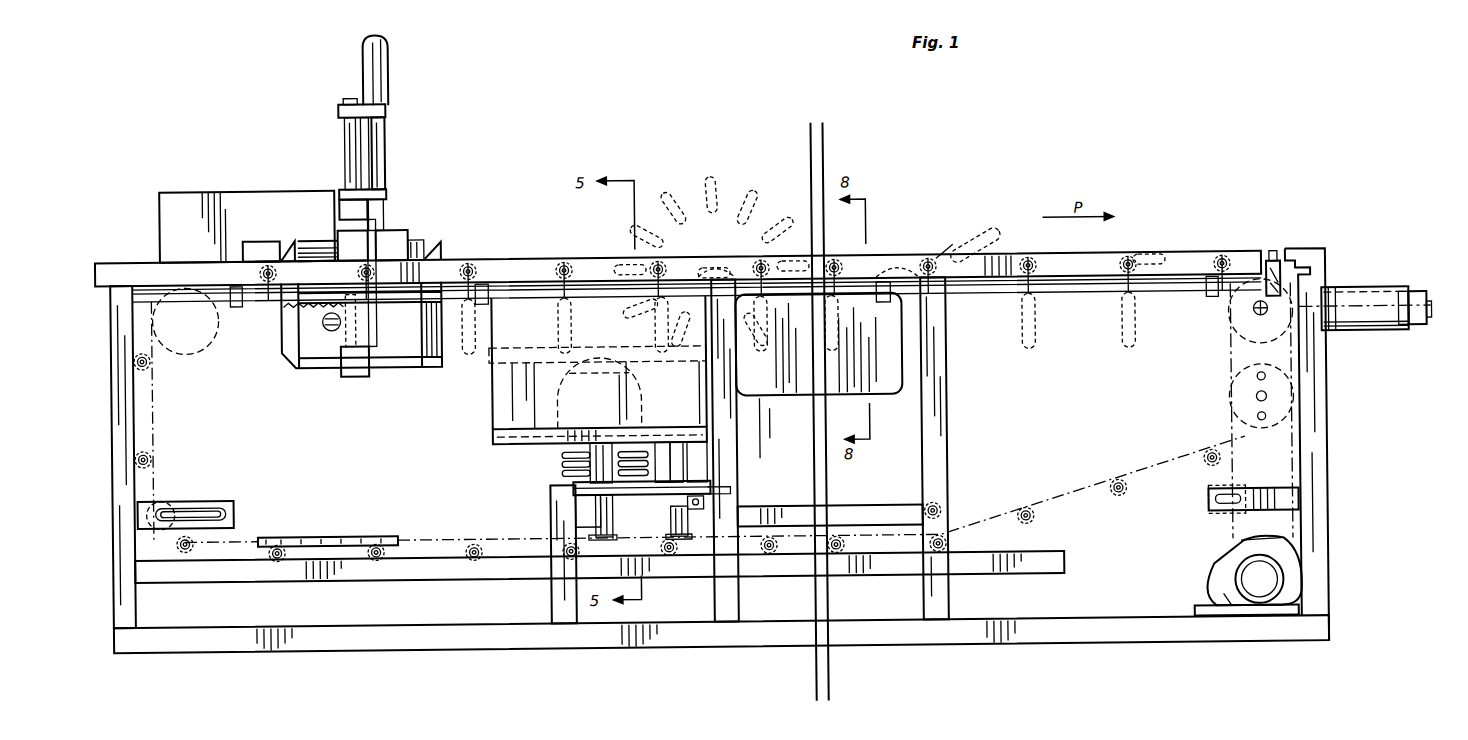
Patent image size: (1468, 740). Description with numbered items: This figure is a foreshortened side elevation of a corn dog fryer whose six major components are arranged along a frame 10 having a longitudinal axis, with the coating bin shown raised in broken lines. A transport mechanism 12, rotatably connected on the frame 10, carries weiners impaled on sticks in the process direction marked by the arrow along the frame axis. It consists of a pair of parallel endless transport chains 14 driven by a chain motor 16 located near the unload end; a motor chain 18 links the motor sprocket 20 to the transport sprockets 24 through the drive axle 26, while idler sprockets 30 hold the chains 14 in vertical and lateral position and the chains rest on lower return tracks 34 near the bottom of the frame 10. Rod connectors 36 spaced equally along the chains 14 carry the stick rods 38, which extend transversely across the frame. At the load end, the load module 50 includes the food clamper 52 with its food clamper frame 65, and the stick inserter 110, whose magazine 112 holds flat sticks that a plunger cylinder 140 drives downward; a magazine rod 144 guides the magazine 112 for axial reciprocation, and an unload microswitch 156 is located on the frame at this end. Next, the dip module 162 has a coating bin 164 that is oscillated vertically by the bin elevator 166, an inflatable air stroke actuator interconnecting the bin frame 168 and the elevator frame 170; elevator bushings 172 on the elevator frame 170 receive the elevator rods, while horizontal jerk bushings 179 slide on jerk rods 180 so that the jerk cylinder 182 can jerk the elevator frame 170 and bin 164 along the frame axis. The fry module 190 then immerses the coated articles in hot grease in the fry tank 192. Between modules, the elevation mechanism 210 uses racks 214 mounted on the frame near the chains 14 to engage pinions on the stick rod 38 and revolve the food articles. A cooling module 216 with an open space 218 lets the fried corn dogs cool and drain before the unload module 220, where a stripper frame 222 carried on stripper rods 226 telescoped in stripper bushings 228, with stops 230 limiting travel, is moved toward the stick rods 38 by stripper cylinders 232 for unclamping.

The frame 10 is at (1110, 612).
The transport mechanism 12 is at (313, 526).
The transport chains 14 is at (1072, 484).
The chain motor 16 is at (1212, 568).
The motor chain 18 is at (1296, 460).
The motor sprocket 20 is at (1256, 545).
The transport sprockets 24 is at (1240, 340).
The drive axle 26 is at (1254, 316).
The idler sprockets 30 is at (188, 348).
The lower return tracks 34 is at (455, 578).
The rod connectors 36 is at (1124, 296).
The stick rods 38 is at (1120, 500).
The load module 50 is at (343, 133).
The food clamper 52 is at (330, 330).
The food clamper frame 65 is at (361, 318).
The stick inserter 110 is at (270, 166).
The magazine 112 is at (275, 222).
The plunger cylinder 140 is at (392, 72).
The magazine rod 144 is at (146, 240).
The unload microswitch 156 is at (243, 247).
The dip module 162 is at (608, 410).
The coating bin 164 is at (493, 400).
The bin elevator 166 is at (560, 459).
The bin frame 168 is at (493, 441).
The elevator frame 170 is at (573, 484).
The elevator bushings 172 is at (692, 474).
The jerk bushings 179 is at (698, 512).
The jerk rods 180 is at (712, 490).
The jerk cylinder 182 is at (550, 507).
The fry module 190 is at (893, 200).
The fry tank 192 is at (746, 396).
The elevation mechanism 210 is at (936, 249).
The racks 214 is at (748, 238).
The cooling module 216 is at (1132, 216).
The open space 218 is at (1040, 410).
The unload module 220 is at (1352, 271).
The stripper frame 222 is at (1369, 292).
The stripper rods 226 is at (1404, 270).
The stripper bushings 228 is at (1349, 288).
The stops 230 is at (1436, 300).
The stripper cylinders 232 is at (1364, 332).